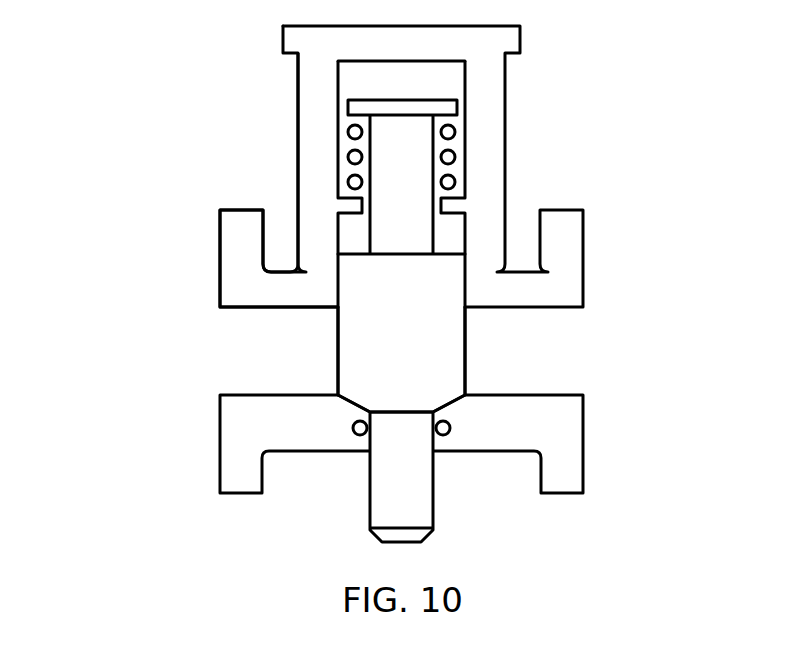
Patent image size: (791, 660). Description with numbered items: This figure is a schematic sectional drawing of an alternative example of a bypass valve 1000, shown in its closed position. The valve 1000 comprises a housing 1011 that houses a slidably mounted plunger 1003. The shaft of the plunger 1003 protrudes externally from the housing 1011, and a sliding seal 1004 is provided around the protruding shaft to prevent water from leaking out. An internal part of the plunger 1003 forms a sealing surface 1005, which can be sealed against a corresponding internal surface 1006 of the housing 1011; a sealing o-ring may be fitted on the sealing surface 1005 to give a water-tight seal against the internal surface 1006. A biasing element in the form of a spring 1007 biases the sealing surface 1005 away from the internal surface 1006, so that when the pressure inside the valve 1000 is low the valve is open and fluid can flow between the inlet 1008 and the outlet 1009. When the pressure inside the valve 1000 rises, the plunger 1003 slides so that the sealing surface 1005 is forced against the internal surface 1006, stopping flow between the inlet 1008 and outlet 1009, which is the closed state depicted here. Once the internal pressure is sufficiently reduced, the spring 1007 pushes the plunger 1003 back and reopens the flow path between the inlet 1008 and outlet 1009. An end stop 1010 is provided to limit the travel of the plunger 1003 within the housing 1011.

The valve 1000 is at (355, 286).
The plunger 1003 is at (367, 170).
The sliding seal 1004 is at (447, 436).
The sealing surface 1005 is at (350, 402).
The internal surface 1006 is at (368, 408).
The spring 1007 is at (455, 153).
The inlet 1008 is at (230, 355).
The outlet 1009 is at (555, 350).
The end stop 1010 is at (350, 207).
The housing 1011 is at (218, 300).